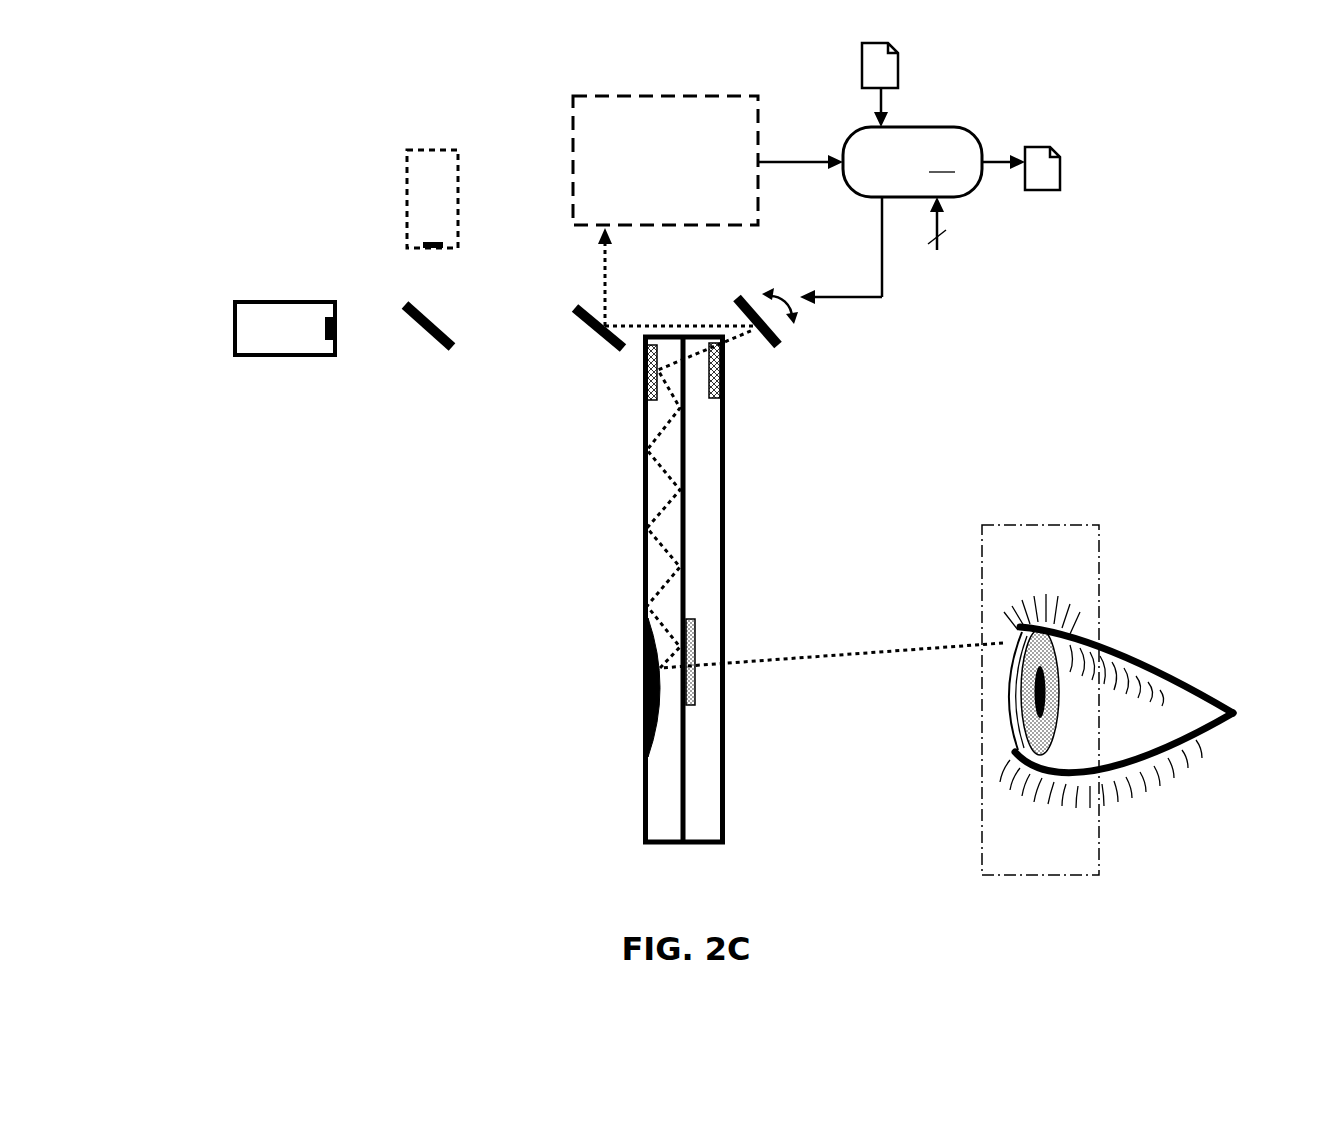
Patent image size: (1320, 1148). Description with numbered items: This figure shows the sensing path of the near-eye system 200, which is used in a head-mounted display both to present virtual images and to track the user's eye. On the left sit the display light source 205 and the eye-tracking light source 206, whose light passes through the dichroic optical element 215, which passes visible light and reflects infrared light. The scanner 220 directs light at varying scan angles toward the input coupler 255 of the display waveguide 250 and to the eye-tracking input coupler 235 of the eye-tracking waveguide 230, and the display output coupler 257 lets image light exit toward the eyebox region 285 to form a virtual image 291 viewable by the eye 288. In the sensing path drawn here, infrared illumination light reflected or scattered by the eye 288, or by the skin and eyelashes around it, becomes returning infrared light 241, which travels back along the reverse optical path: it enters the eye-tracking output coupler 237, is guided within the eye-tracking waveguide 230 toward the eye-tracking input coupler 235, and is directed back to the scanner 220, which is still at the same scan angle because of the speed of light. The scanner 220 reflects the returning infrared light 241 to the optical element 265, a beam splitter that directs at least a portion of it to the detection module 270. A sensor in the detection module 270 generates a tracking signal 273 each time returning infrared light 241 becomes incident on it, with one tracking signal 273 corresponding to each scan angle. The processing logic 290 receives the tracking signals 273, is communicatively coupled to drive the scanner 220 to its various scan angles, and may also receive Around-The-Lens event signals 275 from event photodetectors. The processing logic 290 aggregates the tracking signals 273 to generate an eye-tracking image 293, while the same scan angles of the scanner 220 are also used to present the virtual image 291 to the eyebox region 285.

The near-eye system 200 is at (1228, 91).
The display light source 205 is at (238, 355).
The eye-tracking light source 206 is at (407, 190).
The optical element 215 is at (430, 337).
The scanner 220 is at (783, 336).
The eye-tracking waveguide 230 is at (645, 822).
The eye-tracking input coupler 235 is at (650, 385).
The eye-tracking output coupler 237 is at (645, 762).
The returning infrared light 241 is at (606, 264).
The display waveguide 250 is at (722, 842).
The input coupler 255 is at (722, 378).
The display output coupler 257 is at (695, 690).
The optical element 265 is at (578, 304).
The detection module 270 is at (650, 186).
The tracking signal 273 is at (808, 160).
The Around-The-Lens event signal 275 is at (936, 238).
The eyebox region 285 is at (1100, 875).
The eye 288 is at (1172, 624).
The processing logic 290 is at (891, 215).
The virtual image 291 is at (898, 70).
The eye-tracking image 293 is at (1044, 147).